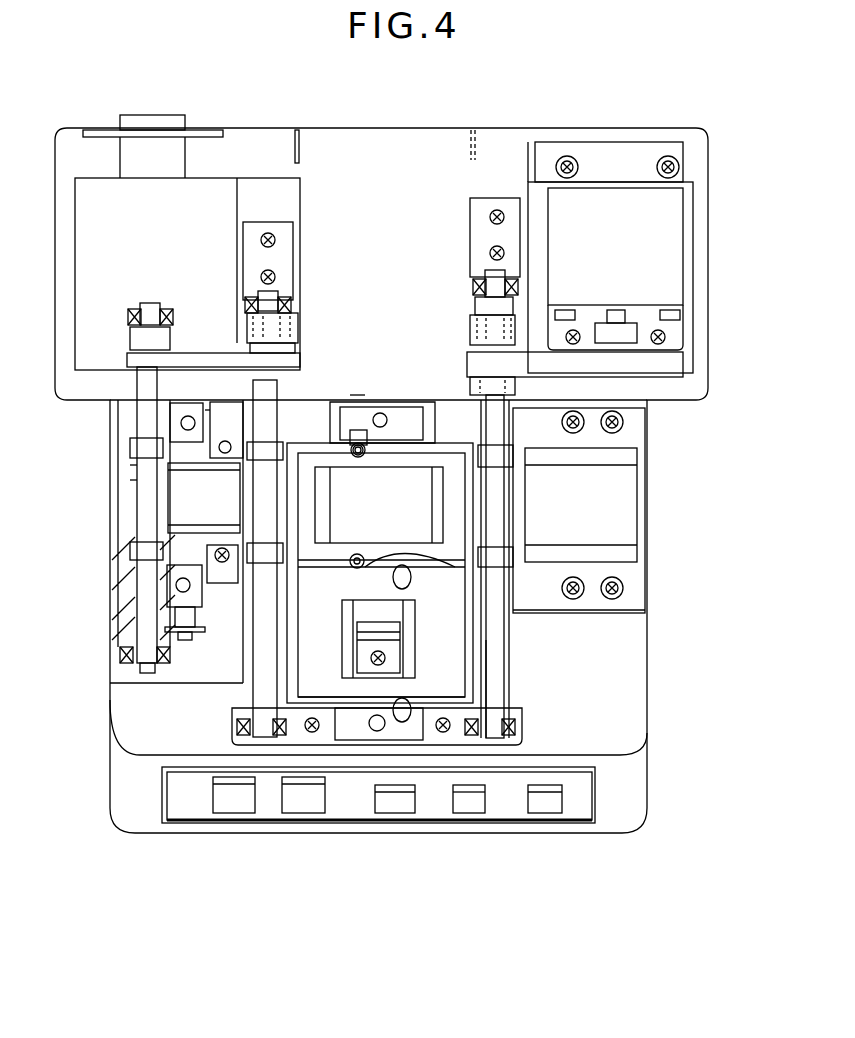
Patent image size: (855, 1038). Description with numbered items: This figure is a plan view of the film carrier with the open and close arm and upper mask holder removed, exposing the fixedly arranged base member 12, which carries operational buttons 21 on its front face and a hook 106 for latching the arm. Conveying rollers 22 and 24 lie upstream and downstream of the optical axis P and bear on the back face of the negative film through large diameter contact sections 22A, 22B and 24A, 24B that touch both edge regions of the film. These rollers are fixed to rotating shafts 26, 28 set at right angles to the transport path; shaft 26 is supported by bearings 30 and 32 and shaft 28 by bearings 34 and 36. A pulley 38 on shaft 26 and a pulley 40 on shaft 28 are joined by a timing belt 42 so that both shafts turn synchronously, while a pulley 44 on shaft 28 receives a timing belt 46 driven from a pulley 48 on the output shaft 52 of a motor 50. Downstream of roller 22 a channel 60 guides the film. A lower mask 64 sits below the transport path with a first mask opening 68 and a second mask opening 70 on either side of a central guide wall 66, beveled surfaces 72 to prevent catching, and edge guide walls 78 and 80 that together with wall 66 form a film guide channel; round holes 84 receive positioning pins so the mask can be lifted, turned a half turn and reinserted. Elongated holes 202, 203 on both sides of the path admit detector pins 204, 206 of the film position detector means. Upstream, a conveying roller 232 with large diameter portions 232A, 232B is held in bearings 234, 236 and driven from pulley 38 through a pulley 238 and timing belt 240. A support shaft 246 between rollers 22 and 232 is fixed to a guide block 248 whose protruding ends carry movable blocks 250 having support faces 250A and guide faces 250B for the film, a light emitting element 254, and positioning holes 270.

The base member 12 is at (672, 395).
The operational buttons 21 is at (285, 812).
The conveying roller 22 is at (204, 498).
The large diameter contact section 22A is at (204, 474).
The large diameter contact section 22B is at (204, 515).
The conveying roller 24 is at (500, 488).
The large diameter contact section 24A is at (505, 447).
The large diameter contact section 24B is at (505, 545).
The rotating shaft 26 is at (253, 705).
The rotating shaft 28 is at (503, 665).
The bearing 30 is at (291, 302).
The bearing 32 is at (232, 730).
The bearing 34 is at (518, 273).
The bearing 36 is at (505, 716).
The pulley 38 is at (300, 348).
The pulley 40 is at (515, 306).
The timing belt 42 is at (298, 326).
The pulley 44 is at (473, 386).
The timing belt 46 is at (570, 370).
The pulley 48 is at (637, 335).
The motor 50 is at (688, 294).
The output shaft 52 is at (625, 315).
The channel 60 is at (648, 532).
The lower mask 64 is at (473, 622).
The guide wall 66 is at (342, 625).
The first mask opening 68 is at (379, 505).
The second mask opening 70 is at (390, 600).
The beveled surface 72 is at (421, 637).
The guide wall 78 is at (355, 443).
The guide wall 80 is at (322, 700).
The round hole 84 is at (382, 413).
The hook 106 is at (400, 658).
The elongated hole 202 is at (362, 457).
The elongated hole 203 is at (470, 572).
The detector pin 204 is at (357, 402).
The detector pin 206 is at (357, 570).
The conveying roller 232 is at (140, 530).
The large diameter portion 232A is at (137, 445).
The large diameter portion 232B is at (130, 575).
The bearing 234 is at (135, 312).
The bearing 236 is at (120, 660).
The pulley 238 is at (130, 338).
The timing belt 240 is at (205, 353).
The support shaft 246 is at (188, 640).
The guide block 248 is at (150, 520).
The movable block 250 is at (170, 420).
The support face 250A is at (130, 480).
The guide face 250B is at (130, 465).
The light emitting element 254 is at (222, 590).
The positioning hole 270 is at (195, 415).
The optical axis P is at (380, 500).